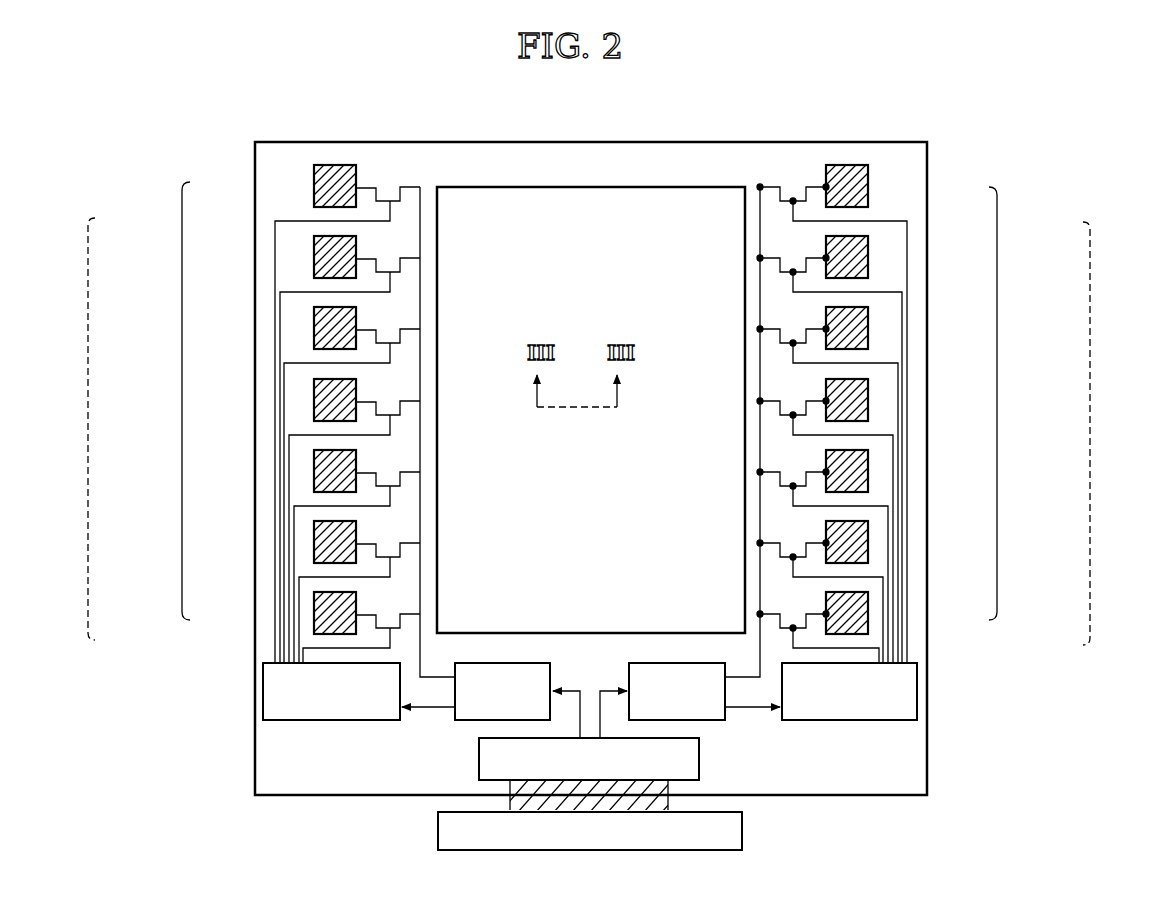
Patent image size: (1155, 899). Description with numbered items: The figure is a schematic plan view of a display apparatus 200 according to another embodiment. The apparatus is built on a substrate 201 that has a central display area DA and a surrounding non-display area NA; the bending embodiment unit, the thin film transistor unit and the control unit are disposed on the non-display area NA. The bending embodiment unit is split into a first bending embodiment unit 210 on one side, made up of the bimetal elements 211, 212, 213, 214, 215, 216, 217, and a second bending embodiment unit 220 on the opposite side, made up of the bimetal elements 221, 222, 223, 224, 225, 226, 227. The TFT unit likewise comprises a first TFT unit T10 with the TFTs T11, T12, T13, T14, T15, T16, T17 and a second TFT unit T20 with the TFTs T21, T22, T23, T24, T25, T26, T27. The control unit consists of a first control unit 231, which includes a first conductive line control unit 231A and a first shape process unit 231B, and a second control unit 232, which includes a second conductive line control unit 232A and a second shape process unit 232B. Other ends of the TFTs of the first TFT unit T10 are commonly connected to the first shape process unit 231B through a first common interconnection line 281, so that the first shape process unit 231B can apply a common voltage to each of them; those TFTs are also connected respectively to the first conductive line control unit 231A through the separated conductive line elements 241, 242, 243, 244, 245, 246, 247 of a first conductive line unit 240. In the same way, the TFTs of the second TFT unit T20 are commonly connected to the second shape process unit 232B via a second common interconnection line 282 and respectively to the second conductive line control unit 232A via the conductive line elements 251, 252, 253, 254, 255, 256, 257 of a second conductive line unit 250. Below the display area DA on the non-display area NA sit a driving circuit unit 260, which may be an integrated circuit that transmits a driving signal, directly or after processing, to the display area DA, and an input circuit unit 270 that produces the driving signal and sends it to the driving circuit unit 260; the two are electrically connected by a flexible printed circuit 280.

The display apparatus 200 is at (955, 134).
The substrate 201 is at (748, 141).
The first bending embodiment unit 210 is at (182, 212).
The bimetal element 211 is at (314, 190).
The bimetal element 212 is at (314, 261).
The bimetal element 213 is at (314, 332).
The bimetal element 214 is at (314, 404).
The bimetal element 215 is at (314, 475).
The bimetal element 216 is at (314, 546).
The bimetal element 217 is at (314, 617).
The second bending embodiment unit 220 is at (998, 208).
The bimetal element 221 is at (868, 190).
The bimetal element 222 is at (868, 261).
The bimetal element 223 is at (868, 332).
The bimetal element 224 is at (868, 404).
The bimetal element 225 is at (868, 475).
The bimetal element 226 is at (868, 546).
The bimetal element 227 is at (868, 617).
The first control unit 231 is at (163, 728).
The first conductive line control unit 231A is at (293, 720).
The first shape process unit 231B is at (457, 721).
The second control unit 232 is at (1002, 728).
The second conductive line control unit 232A is at (889, 720).
The second shape process unit 232B is at (725, 721).
The first conductive line unit 240 is at (85, 420).
The conductive line element 241 is at (275, 221).
The conductive line element 242 is at (280, 292).
The conductive line element 243 is at (284, 363).
The conductive line element 244 is at (289, 435).
The conductive line element 245 is at (294, 506).
The conductive line element 246 is at (299, 577).
The conductive line element 247 is at (303, 648).
The second conductive line unit 250 is at (1093, 420).
The conductive line element 251 is at (907, 221).
The conductive line element 252 is at (902, 292).
The conductive line element 253 is at (898, 363).
The conductive line element 254 is at (893, 435).
The conductive line element 255 is at (888, 506).
The conductive line element 256 is at (883, 577).
The conductive line element 257 is at (879, 648).
The driving circuit unit 260 is at (699, 762).
The input circuit unit 270 is at (742, 835).
The flexible printed circuit 280 is at (510, 797).
The first common interconnection line 281 is at (420, 648).
The second common interconnection line 282 is at (760, 648).
The non-display area NA is at (292, 158).
The display area DA is at (591, 215).
The first TFT unit T10 is at (521, 216).
The TFT T11 is at (390, 201).
The TFT T12 is at (390, 272).
The TFT T13 is at (390, 343).
The TFT T14 is at (390, 415).
The TFT T15 is at (390, 486).
The TFT T16 is at (390, 557).
The TFT T17 is at (390, 628).
The second TFT unit T20 is at (659, 216).
The TFT T21 is at (793, 201).
The TFT T22 is at (793, 272).
The TFT T23 is at (793, 343).
The TFT T24 is at (793, 415).
The TFT T25 is at (793, 486).
The TFT T26 is at (793, 557).
The TFT T27 is at (793, 628).